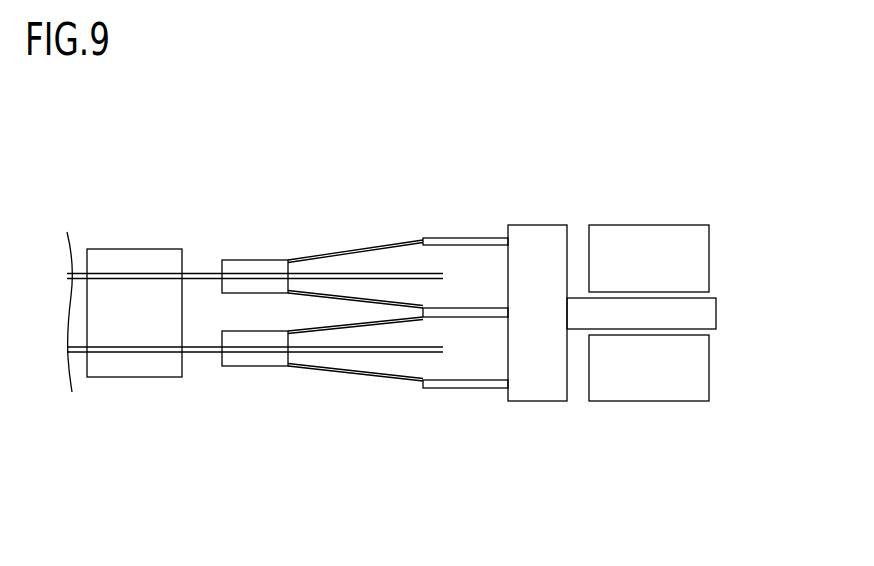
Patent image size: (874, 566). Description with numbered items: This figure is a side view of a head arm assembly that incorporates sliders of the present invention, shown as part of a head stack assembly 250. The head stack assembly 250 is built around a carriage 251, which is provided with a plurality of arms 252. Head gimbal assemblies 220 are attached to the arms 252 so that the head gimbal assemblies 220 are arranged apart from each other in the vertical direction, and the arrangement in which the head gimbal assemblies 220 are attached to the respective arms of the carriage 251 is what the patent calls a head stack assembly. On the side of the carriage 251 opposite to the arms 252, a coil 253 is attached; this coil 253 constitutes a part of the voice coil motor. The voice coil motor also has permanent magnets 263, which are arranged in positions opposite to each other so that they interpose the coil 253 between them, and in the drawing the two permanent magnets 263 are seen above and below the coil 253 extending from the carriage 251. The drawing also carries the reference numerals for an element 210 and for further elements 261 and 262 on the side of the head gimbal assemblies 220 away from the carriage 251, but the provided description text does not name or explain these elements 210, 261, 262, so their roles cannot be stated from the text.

The lead wire 210 is at (221, 273).
The head gimbal assembly 220 is at (346, 252).
The head stack assembly 250 is at (540, 197).
The carriage 251 is at (542, 393).
The arm 252 is at (443, 238).
The coil 253 is at (705, 317).
The holder block 261 is at (112, 257).
The clamp 262 is at (196, 258).
The permanent magnet 263 is at (643, 225).